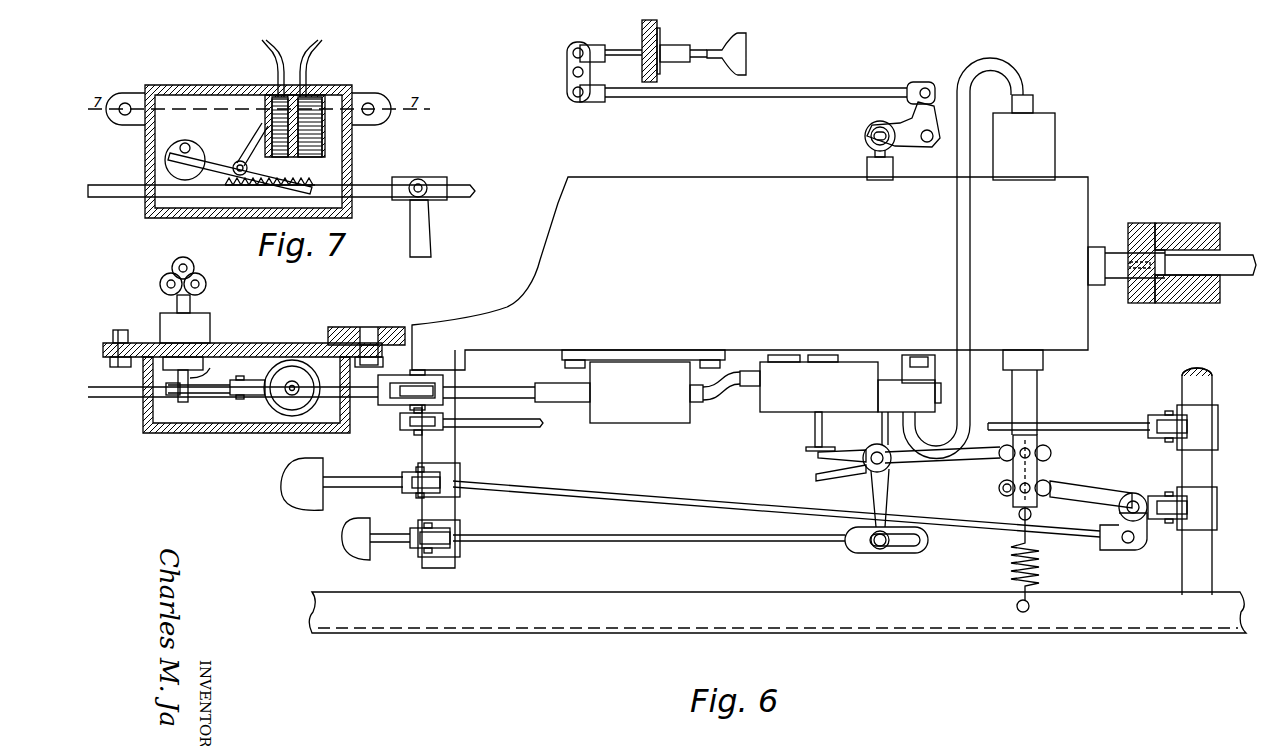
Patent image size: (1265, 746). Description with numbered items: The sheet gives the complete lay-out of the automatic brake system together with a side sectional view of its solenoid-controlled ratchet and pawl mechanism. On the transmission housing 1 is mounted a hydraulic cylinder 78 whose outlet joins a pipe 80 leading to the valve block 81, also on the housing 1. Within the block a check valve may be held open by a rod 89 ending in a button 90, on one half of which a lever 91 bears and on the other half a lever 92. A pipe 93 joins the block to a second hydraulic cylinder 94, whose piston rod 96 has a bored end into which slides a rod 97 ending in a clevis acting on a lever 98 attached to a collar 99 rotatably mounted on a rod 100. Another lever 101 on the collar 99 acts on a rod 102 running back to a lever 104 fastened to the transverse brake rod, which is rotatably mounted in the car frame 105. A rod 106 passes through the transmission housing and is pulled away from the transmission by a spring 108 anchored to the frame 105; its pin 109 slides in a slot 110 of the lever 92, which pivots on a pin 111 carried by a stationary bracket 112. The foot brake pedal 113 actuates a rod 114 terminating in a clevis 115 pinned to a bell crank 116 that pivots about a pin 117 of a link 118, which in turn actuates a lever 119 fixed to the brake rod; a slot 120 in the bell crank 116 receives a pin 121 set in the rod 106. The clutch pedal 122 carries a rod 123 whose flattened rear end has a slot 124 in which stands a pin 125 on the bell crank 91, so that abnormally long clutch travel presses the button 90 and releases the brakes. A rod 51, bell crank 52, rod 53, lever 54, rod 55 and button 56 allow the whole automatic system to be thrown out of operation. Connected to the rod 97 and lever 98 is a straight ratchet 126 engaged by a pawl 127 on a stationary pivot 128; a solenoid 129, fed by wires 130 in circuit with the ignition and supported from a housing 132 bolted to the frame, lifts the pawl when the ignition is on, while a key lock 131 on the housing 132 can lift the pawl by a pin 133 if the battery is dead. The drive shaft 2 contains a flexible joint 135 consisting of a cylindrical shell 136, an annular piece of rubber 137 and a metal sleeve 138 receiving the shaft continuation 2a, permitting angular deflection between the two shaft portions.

In FIG. 6, the housing 1 is at (1090, 327).
In FIG. 6, the drive shaft 2 is at (1112, 260).
In FIG. 6, the continuation of the drive shaft 2a is at (1237, 272).
In FIG. 6, the rod 51 is at (868, 149).
In FIG. 6, the bell crank 52 is at (910, 148).
In FIG. 6, the rod 53 is at (806, 87).
In FIG. 6, the lever 54 is at (566, 72).
In FIG. 6, the rod 55 is at (609, 51).
In FIG. 6, the button 56 is at (749, 52).
In FIG. 6, the cylinder 78 is at (1060, 144).
In FIG. 6, the pipe 80 is at (1020, 64).
In FIG. 6, the valve block 81 is at (790, 413).
In FIG. 6, the rod 89 is at (815, 432).
In FIG. 6, the button 90 is at (808, 449).
In FIG. 6, the lever 91 is at (817, 460).
In FIG. 6, the lever 92 is at (821, 480).
In FIG. 6, the pipe 93 is at (716, 402).
In FIG. 6, the second hydraulic cylinder 94 is at (648, 424).
In FIG. 6, the piston rod 96 is at (556, 403).
In FIG. 7, the rod 97 is at (456, 183).
In FIG. 6, the rod 97 is at (470, 390).
In FIG. 7, the lever 98 is at (419, 186).
In FIG. 6, the lever 98 is at (409, 389).
In FIG. 6, the collar 99 is at (463, 421).
In FIG. 6, the rod 100 is at (460, 456).
In FIG. 6, the lever 101 is at (414, 432).
In FIG. 6, the rod 102 is at (1071, 422).
In FIG. 6, the lever 104 is at (1186, 426).
In FIG. 6, the frame member 105 is at (1090, 636).
In FIG. 6, the rod 106 is at (1040, 399).
In FIG. 6, the spring 108 is at (1037, 568).
In FIG. 6, the pin 109 is at (1032, 461).
In FIG. 6, the slot 110 is at (1053, 448).
In FIG. 6, the pin 111 is at (886, 470).
In FIG. 6, the stationary bracket 112 is at (876, 420).
In FIG. 6, the foot brake pedal 113 is at (302, 491).
In FIG. 6, the rod 114 is at (600, 490).
In FIG. 6, the clevis 115 is at (1107, 551).
In FIG. 6, the bell crank 116 is at (1098, 488).
In FIG. 6, the pin 117 is at (1136, 505).
In FIG. 6, the link 118 is at (1150, 524).
In FIG. 6, the lever 119 is at (1188, 511).
In FIG. 6, the slot 120 is at (1009, 493).
In FIG. 6, the pin 121 is at (1032, 495).
In FIG. 6, the clutch pedal 122 is at (354, 540).
In FIG. 6, the rod 123 is at (645, 544).
In FIG. 6, the slot 124 is at (913, 541).
In FIG. 6, the pin 125 is at (876, 550).
In FIG. 7, the straight ratchet 126 is at (242, 192).
In FIG. 6, the straight ratchet 126 is at (135, 394).
In FIG. 7, the pawl 127 is at (302, 178).
In FIG. 6, the pawl 127 is at (213, 392).
In FIG. 7, the pivot 128 is at (238, 162).
In FIG. 6, the pivot 128 is at (241, 376).
In FIG. 7, the solenoid 129 is at (326, 130).
In FIG. 6, the solenoid 129 is at (276, 415).
In FIG. 7, the wires 130 is at (312, 48).
In FIG. 7, the lock 131 is at (172, 165).
In FIG. 6, the lock 131 is at (213, 341).
In FIG. 7, the housing 132 is at (168, 86).
In FIG. 6, the housing 132 is at (162, 436).
In FIG. 7, the pin 133 is at (184, 144).
In FIG. 6, the pin 133 is at (211, 368).
In FIG. 6, the flexible joint 135 is at (1180, 216).
In FIG. 6, the cylindrical shell 136 is at (1180, 304).
In FIG. 6, the annular piece of rubber 137 is at (1221, 242).
In FIG. 6, the metal sleeve 138 is at (1223, 283).